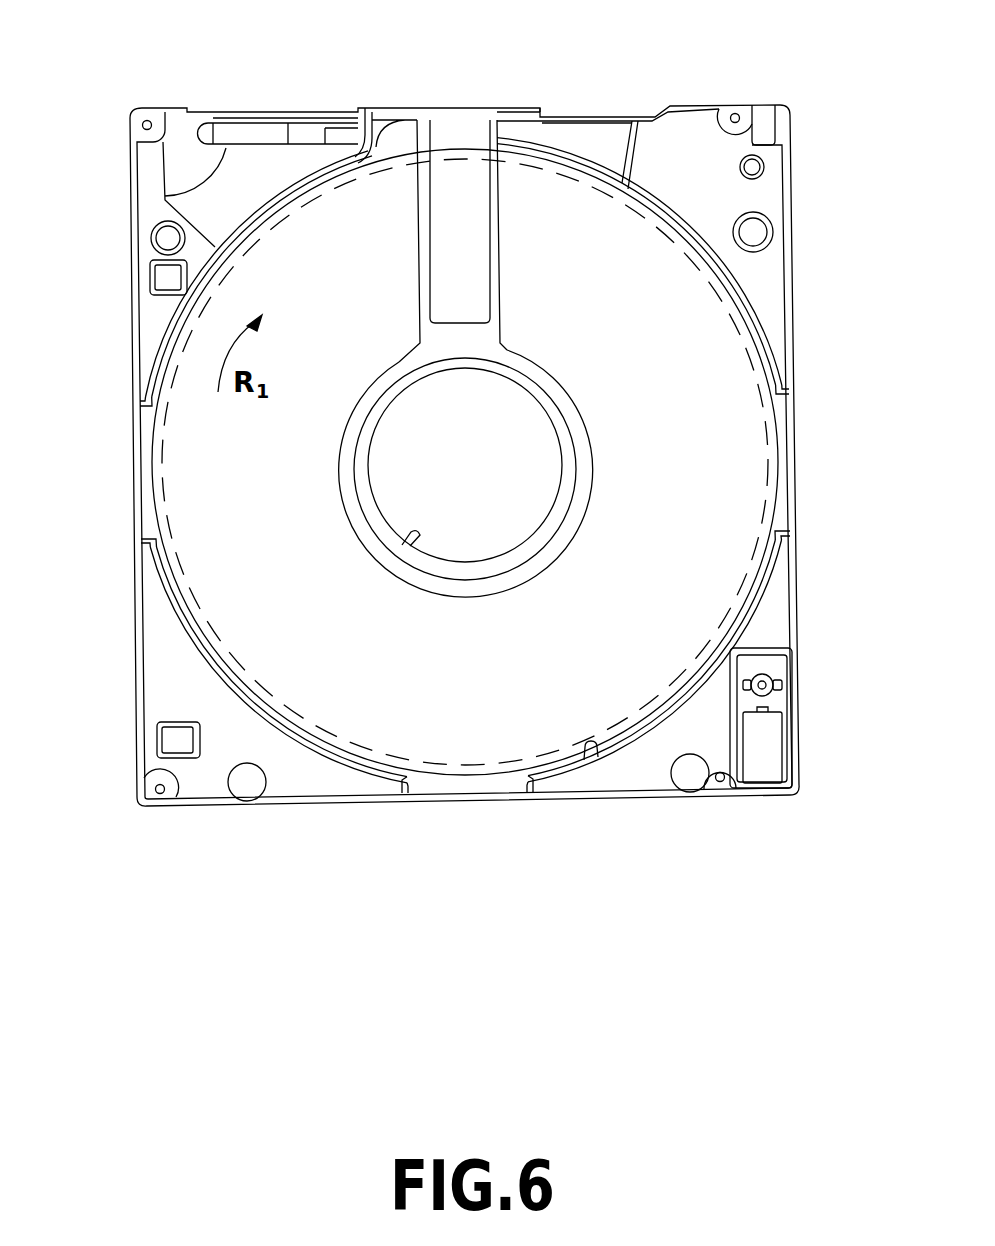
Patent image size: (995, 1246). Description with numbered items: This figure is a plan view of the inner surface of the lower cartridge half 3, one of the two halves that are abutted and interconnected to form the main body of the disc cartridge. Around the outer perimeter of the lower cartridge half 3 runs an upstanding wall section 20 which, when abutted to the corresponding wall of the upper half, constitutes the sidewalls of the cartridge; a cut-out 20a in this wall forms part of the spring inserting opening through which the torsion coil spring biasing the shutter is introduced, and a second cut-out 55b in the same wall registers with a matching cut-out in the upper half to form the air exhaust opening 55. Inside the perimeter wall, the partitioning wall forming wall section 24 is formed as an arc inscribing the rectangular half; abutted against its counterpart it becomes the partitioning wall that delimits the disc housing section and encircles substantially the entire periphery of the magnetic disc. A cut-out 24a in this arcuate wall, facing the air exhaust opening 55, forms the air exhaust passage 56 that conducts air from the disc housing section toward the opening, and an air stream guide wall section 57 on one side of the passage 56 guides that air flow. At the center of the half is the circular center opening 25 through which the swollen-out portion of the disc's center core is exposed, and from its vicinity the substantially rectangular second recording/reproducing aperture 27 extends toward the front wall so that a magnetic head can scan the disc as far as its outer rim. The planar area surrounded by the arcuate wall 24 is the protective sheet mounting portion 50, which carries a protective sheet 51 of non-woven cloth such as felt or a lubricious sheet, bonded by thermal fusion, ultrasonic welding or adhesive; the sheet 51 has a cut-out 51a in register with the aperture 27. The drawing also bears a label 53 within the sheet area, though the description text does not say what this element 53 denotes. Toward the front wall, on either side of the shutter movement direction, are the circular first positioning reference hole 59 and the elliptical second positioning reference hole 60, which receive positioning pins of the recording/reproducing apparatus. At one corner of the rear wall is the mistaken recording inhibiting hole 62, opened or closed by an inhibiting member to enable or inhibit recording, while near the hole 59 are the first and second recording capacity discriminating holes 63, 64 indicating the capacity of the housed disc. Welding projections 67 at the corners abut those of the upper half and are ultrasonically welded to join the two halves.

The lower cartridge half 3 is at (133, 692).
The upstanding wall section 20 is at (790, 212).
The cut-out 20a is at (235, 122).
The partitioning wall forming wall section 24 is at (755, 318).
The cut-out 24a is at (620, 192).
The center opening 25 is at (408, 538).
The second recording/reproducing aperture 27 is at (438, 157).
The protective sheet mounting portion 50 is at (586, 748).
The protective sheet 51 is at (185, 437).
The cut-out 51a is at (487, 163).
The recording area 53 is at (740, 474).
The air exhaust opening 55 is at (190, 487).
The cut-out 55b is at (596, 120).
The air exhaust passage 56 is at (618, 118).
The air stream guide wall section 57 is at (646, 150).
The first positioning reference hole 59 is at (160, 238).
The second positioning reference hole 60 is at (762, 235).
The mistaken recording inhibiting hole 62 is at (780, 752).
The first recording capacity discriminating hole 63 is at (155, 275).
The second recording capacity discriminating hole 64 is at (160, 745).
The welding projection 67 is at (150, 118).